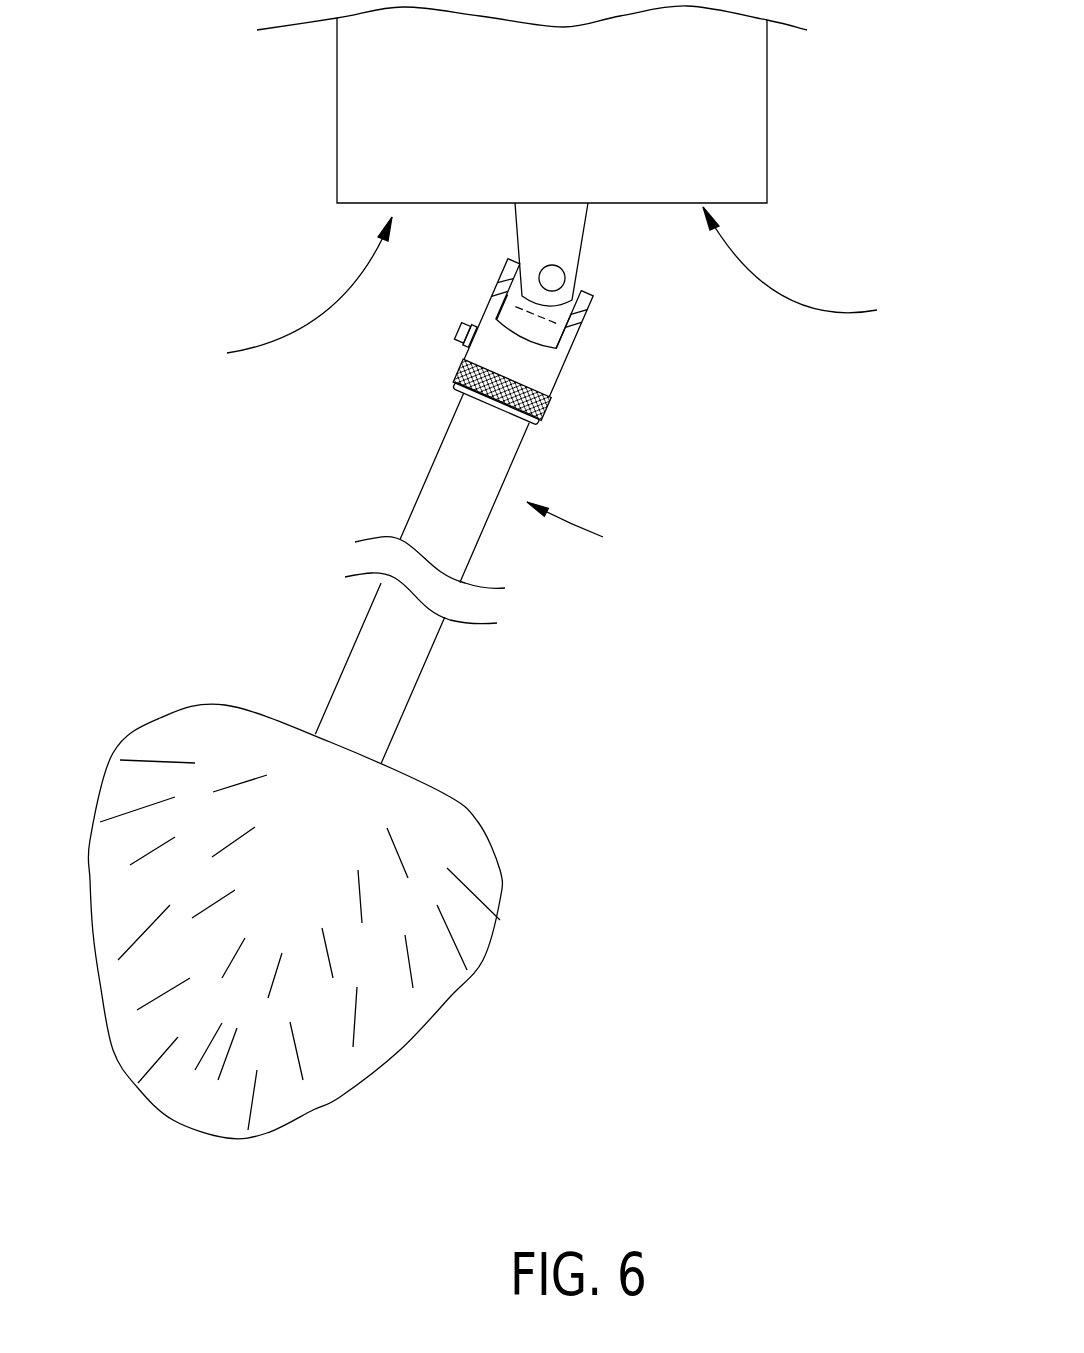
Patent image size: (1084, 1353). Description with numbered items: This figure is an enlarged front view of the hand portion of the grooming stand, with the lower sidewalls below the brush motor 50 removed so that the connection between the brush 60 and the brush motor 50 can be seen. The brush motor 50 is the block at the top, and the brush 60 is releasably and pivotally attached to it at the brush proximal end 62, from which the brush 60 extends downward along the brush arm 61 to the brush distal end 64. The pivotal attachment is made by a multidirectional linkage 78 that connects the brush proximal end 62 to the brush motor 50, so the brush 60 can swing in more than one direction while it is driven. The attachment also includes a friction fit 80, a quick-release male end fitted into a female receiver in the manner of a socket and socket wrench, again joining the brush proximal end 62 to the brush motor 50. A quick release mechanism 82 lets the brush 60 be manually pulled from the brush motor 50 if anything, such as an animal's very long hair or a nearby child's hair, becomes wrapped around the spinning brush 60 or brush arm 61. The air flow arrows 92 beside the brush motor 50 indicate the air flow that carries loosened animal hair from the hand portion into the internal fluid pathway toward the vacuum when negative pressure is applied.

The brush motor 50 is at (620, 203).
The brush 60 is at (437, 955).
The brush arm 61 is at (413, 503).
The proximal end 62 is at (582, 532).
The brush distal end 64 is at (217, 1140).
The multidirectional linkage 78 is at (565, 355).
The friction fit 80 is at (545, 372).
The quick release mechanism 82 is at (450, 337).
The air flow arrows 92 is at (322, 310).